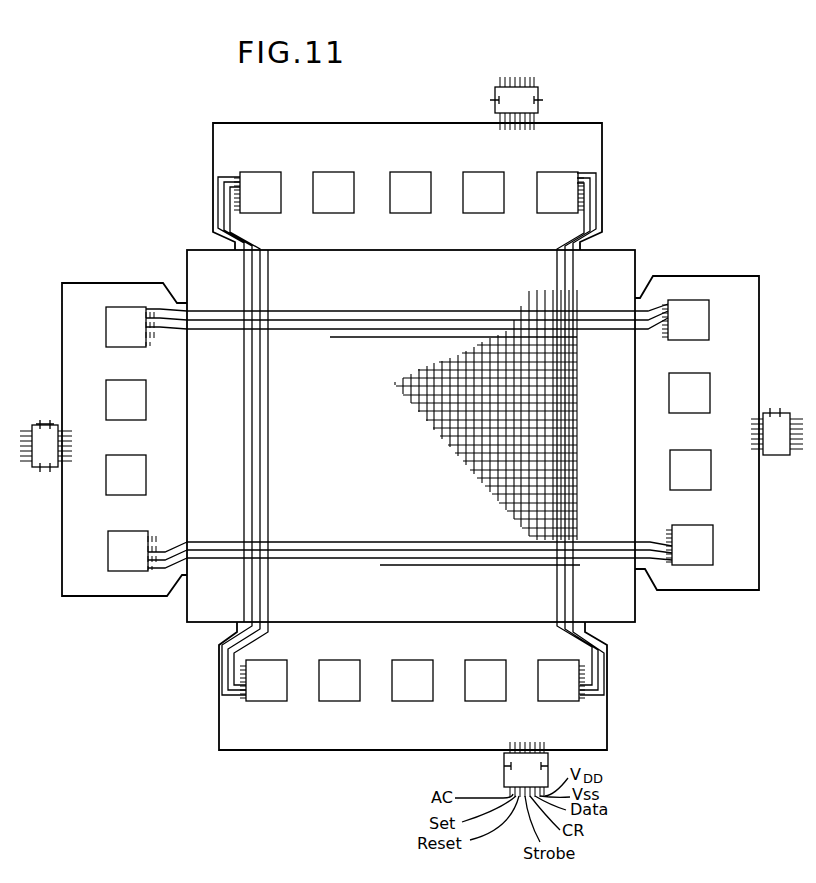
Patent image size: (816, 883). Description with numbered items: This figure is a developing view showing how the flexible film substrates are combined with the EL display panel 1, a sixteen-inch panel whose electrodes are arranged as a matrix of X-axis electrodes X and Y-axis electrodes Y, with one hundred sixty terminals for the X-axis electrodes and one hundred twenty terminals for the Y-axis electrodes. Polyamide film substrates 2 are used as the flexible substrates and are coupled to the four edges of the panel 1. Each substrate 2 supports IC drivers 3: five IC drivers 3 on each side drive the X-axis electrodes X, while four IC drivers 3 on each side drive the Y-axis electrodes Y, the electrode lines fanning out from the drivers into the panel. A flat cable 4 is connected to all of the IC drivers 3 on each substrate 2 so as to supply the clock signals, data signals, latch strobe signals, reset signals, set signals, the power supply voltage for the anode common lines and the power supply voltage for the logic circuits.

The EL display panel 1 is at (210, 613).
The polyamide film substrate 2 is at (227, 720).
The IC driver 3 is at (267, 695).
The flat cable 4 is at (502, 771).
The X-axis electrodes X is at (263, 263).
The Y-axis electrodes Y is at (205, 333).